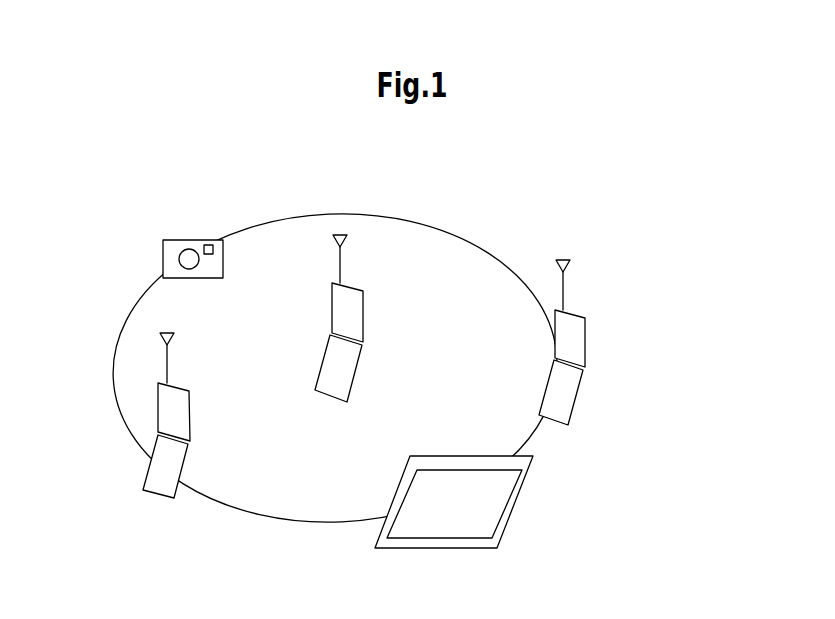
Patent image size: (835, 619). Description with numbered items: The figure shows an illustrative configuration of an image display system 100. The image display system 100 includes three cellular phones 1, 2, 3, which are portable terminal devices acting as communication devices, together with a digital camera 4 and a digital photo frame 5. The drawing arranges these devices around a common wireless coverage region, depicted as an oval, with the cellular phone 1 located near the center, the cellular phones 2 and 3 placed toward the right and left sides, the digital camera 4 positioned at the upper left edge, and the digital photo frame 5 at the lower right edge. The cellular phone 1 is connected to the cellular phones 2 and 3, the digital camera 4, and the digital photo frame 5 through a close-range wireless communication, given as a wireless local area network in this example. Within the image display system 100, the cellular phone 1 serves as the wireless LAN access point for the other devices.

The image display system 100 is at (498, 207).
The cellular phone 1 is at (323, 398).
The cellular phone 2 is at (579, 393).
The cellular phone 3 is at (142, 490).
The digital camera 4 is at (163, 248).
The digital photo frame 5 is at (522, 497).